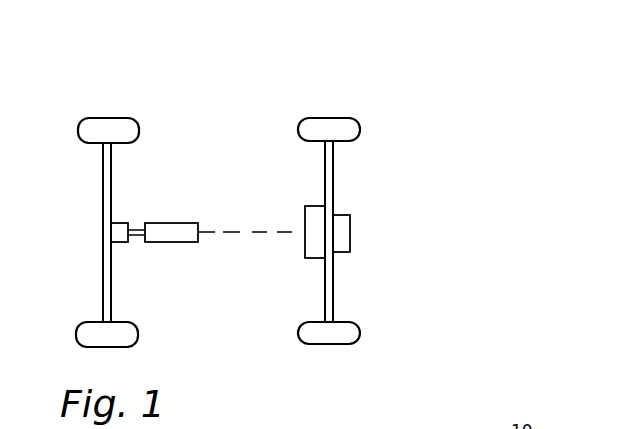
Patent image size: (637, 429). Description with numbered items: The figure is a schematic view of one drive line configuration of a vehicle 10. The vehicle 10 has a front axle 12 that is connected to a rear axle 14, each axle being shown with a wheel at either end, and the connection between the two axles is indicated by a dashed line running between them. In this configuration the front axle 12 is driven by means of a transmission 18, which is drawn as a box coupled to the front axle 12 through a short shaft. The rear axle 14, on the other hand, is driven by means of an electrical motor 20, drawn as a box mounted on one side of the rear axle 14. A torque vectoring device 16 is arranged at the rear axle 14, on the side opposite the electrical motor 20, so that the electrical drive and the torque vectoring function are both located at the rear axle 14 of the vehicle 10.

The vehicle 10 is at (414, 109).
The front axle 12 is at (111, 287).
The rear axle 14 is at (334, 188).
The torque vectoring device 16 is at (350, 245).
The transmission 18 is at (155, 222).
The electrical motor 20 is at (303, 243).